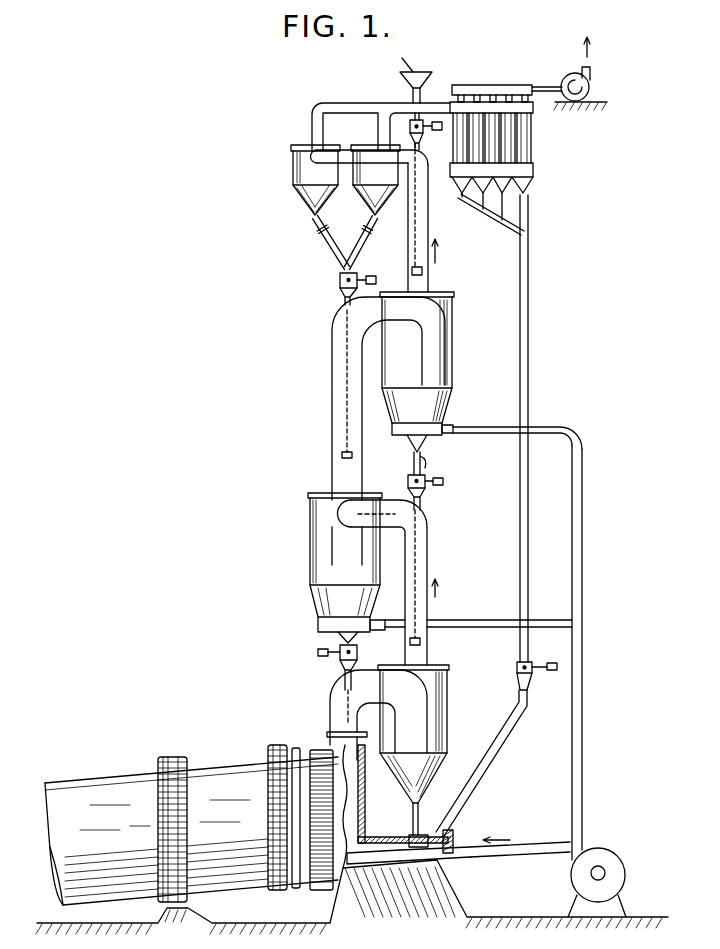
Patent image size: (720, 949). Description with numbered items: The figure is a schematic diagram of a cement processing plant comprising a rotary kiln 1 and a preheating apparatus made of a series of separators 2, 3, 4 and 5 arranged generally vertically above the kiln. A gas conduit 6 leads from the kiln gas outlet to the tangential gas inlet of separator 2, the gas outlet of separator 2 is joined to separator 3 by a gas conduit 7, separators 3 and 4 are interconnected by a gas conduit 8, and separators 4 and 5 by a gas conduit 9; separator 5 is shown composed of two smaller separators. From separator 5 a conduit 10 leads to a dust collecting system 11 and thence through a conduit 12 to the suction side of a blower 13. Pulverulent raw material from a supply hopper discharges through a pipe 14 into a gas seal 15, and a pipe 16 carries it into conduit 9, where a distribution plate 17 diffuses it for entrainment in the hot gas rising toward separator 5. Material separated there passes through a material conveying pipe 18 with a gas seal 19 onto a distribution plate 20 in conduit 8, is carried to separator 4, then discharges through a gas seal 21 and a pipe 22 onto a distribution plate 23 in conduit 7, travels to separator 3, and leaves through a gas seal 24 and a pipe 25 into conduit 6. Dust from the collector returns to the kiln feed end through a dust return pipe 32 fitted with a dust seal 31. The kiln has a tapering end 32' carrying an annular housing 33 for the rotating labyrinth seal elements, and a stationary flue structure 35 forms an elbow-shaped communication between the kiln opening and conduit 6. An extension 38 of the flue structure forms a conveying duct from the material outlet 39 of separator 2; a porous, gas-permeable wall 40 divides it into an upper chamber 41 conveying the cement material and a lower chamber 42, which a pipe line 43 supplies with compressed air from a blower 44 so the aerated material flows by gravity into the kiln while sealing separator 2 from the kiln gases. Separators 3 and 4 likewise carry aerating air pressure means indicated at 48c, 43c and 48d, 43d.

The rotary kiln 1 is at (203, 770).
The separator 2 is at (447, 718).
The separator 3 is at (310, 545).
The separator 4 is at (453, 352).
The separator 5 is at (363, 203).
The gas conduit 6 is at (330, 718).
The gas conduit 7 is at (428, 545).
The gas conduit 8 is at (332, 372).
The gas conduit 9 is at (430, 220).
The conduit 10 is at (437, 103).
The dust collecting system 11 is at (541, 146).
The conduit 12 is at (543, 83).
The blower 13 is at (590, 84).
The pipe 14 is at (413, 96).
The gas seal 15 is at (423, 138).
The pipe 16 is at (422, 156).
The distribution plate 17 is at (428, 275).
The material conveying pipe 18 is at (340, 270).
The gas seal 19 is at (342, 293).
The distribution plate 20 is at (340, 457).
The gas seal 21 is at (427, 490).
The pipe 22 is at (422, 506).
The distribution plate 23 is at (428, 645).
The gas seal 24 is at (340, 657).
The pipe 25 is at (347, 673).
The dust seal 31 is at (517, 677).
The dust return pipe 32 is at (503, 515).
The tapering end 32' is at (316, 831).
The annular housing 33 is at (297, 758).
The stationary flue structure 35 is at (369, 798).
The extension of the flue structure 38 is at (398, 837).
The material outlet 39 is at (412, 814).
The wall 40 is at (378, 854).
The upper chamber 41 is at (418, 840).
The lower chamber 42 is at (406, 856).
The pipe line 43 is at (507, 858).
The air pressure supply pipe 43c is at (502, 609).
The air pressure supply pipe 43d is at (503, 411).
The blower 44 is at (614, 862).
The annular housing 48c is at (318, 625).
The annular housing 48d is at (402, 443).